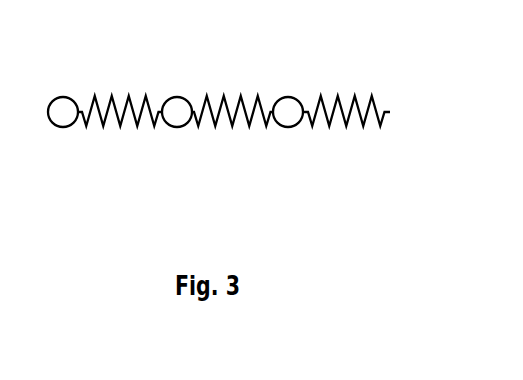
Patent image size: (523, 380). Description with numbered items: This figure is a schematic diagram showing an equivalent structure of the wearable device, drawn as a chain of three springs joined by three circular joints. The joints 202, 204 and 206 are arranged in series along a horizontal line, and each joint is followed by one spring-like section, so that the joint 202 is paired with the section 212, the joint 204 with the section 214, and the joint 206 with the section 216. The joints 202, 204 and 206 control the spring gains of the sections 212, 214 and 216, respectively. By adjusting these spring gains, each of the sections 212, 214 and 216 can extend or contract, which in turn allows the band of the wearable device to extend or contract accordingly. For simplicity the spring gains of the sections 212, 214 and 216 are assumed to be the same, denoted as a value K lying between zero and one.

The joint 202 is at (63, 128).
The joint 204 is at (178, 128).
The joint 206 is at (290, 128).
The section 212 is at (118, 88).
The section 214 is at (237, 88).
The section 216 is at (357, 88).